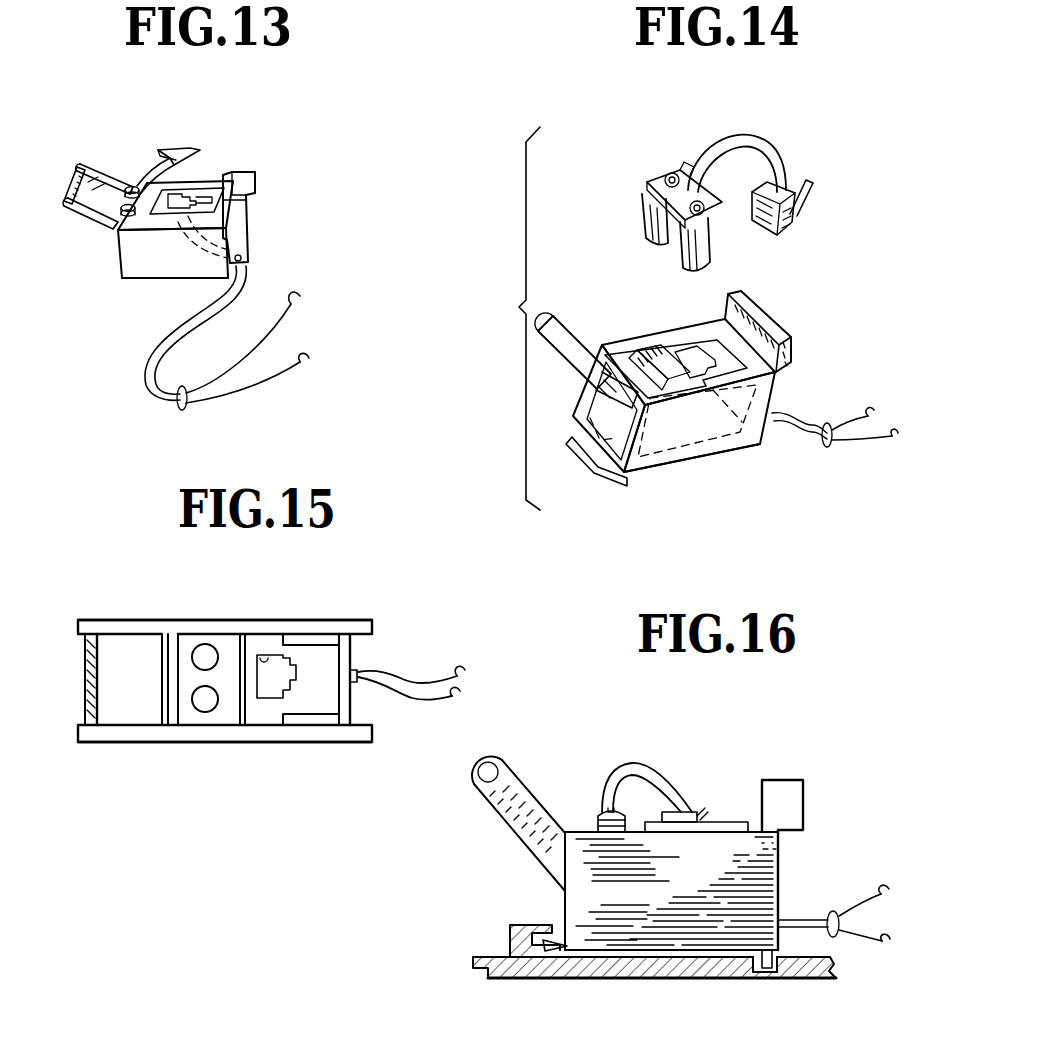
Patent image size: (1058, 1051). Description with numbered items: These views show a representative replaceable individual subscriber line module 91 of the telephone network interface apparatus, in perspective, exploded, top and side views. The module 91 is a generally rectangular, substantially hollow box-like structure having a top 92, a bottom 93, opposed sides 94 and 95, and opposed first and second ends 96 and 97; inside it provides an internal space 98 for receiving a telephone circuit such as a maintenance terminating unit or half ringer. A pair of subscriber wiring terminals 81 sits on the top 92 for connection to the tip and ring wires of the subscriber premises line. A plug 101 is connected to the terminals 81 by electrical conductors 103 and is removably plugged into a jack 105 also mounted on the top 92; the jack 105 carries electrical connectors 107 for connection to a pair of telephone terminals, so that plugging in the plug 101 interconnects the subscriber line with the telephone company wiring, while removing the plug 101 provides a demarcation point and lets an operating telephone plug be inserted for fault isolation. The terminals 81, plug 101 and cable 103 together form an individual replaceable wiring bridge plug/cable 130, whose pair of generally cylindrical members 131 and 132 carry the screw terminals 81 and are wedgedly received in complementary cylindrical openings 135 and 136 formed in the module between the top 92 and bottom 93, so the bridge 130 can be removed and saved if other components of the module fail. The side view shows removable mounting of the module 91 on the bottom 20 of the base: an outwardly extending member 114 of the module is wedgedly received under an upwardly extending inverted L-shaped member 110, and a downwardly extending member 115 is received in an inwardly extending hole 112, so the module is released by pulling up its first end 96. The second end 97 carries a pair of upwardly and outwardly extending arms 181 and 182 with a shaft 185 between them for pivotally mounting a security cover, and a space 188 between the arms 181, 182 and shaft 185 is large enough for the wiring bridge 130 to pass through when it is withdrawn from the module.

In FIG. 16, the bottom of the base 20 is at (613, 970).
In FIG. 13, the subscriber wiring terminals 81 is at (129, 188).
In FIG. 14, the subscriber wiring terminals 81 is at (654, 212).
In FIG. 16, the subscriber wiring terminals 81 is at (598, 800).
In FIG. 13, the replaceable individual subscriber line module 91 is at (179, 196).
In FIG. 14, the replaceable individual subscriber line module 91 is at (706, 369).
In FIG. 15, the replaceable individual subscriber line module 91 is at (213, 666).
In FIG. 16, the replaceable individual subscriber line module 91 is at (681, 855).
In FIG. 13, the top 92 is at (117, 229).
In FIG. 14, the top 92 is at (716, 320).
In FIG. 15, the top 92 is at (323, 632).
In FIG. 16, the top 92 is at (760, 822).
In FIG. 13, the bottom 93 is at (165, 282).
In FIG. 14, the bottom 93 is at (702, 458).
In FIG. 16, the bottom 93 is at (693, 952).
In FIG. 15, the side 94 is at (248, 618).
In FIG. 13, the side 95 is at (130, 250).
In FIG. 15, the side 95 is at (235, 742).
In FIG. 16, the side 95 is at (671, 891).
In FIG. 14, the first end 96 is at (790, 382).
In FIG. 15, the first end 96 is at (363, 648).
In FIG. 16, the first end 96 is at (786, 868).
In FIG. 13, the second end 97 is at (98, 196).
In FIG. 14, the second end 97 is at (586, 360).
In FIG. 15, the second end 97 is at (157, 676).
In FIG. 16, the second end 97 is at (563, 905).
In FIG. 14, the internal space 98 is at (699, 422).
In FIG. 13, the plug 101 is at (165, 172).
In FIG. 14, the plug 101 is at (780, 240).
In FIG. 16, the plug 101 is at (690, 800).
In FIG. 13, the electrical conductors 103 is at (140, 182).
In FIG. 14, the electrical conductors 103 is at (753, 138).
In FIG. 16, the electrical conductors 103 is at (667, 786).
In FIG. 13, the jack 105 is at (178, 200).
In FIG. 14, the jack 105 is at (738, 352).
In FIG. 15, the jack 105 is at (263, 657).
In FIG. 16, the jack 105 is at (742, 822).
In FIG. 13, the electrical connectors 107 is at (183, 410).
In FIG. 14, the electrical connectors 107 is at (826, 448).
In FIG. 16, the electrical connectors 107 is at (838, 938).
In FIG. 16, the inverted L-shaped member 110 is at (508, 938).
In FIG. 16, the hole 112 is at (765, 978).
In FIG. 16, the outwardly extending member 114 is at (550, 948).
In FIG. 16, the downwardly extending member 115 is at (773, 952).
In FIG. 13, the replaceable wiring bridge plug/cable 130 is at (187, 136).
In FIG. 14, the replaceable wiring bridge plug/cable 130 is at (690, 143).
In FIG. 16, the replaceable wiring bridge plug/cable 130 is at (653, 748).
In FIG. 14, the cylindrical member 131 is at (647, 237).
In FIG. 14, the cylindrical member 132 is at (684, 262).
In FIG. 15, the cylindrical opening 135 is at (200, 650).
In FIG. 15, the cylindrical opening 136 is at (208, 712).
In FIG. 15, the arm 181 is at (112, 620).
In FIG. 15, the arm 182 is at (118, 744).
In FIG. 15, the shaft 185 is at (90, 700).
In FIG. 15, the space 188 is at (128, 656).